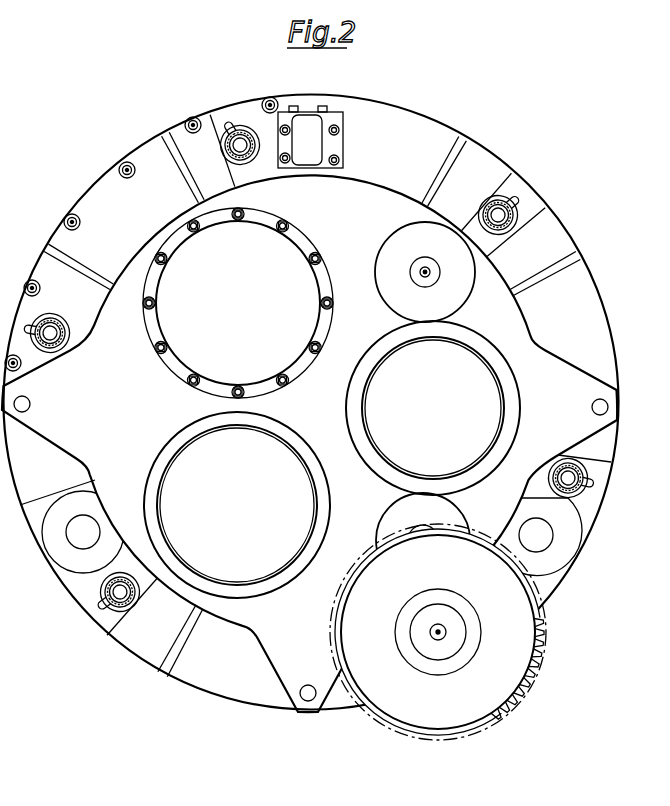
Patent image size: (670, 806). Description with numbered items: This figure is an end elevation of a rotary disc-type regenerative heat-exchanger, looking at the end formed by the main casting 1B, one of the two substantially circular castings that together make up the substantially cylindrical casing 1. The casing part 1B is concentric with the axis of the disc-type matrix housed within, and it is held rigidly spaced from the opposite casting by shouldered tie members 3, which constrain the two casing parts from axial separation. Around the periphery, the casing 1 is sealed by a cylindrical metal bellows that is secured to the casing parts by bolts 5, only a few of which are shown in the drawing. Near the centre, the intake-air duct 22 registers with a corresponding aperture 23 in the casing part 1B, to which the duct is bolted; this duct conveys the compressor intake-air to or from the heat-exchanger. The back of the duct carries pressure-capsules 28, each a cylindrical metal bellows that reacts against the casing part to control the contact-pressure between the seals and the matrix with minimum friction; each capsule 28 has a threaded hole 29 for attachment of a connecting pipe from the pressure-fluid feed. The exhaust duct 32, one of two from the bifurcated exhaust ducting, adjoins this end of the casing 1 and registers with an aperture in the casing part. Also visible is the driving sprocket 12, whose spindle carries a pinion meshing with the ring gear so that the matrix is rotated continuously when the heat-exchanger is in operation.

The casing 1 is at (592, 283).
The main casting 1B is at (408, 122).
The shouldered tie member 3 is at (58, 340).
The bolt 5 is at (127, 178).
The driving sprocket 12 is at (524, 694).
The intake-air duct 22 is at (504, 420).
The aperture 23 is at (446, 409).
The pressure-capsule 28 is at (398, 231).
The threaded hole 29 is at (420, 272).
The exhaust duct 32 is at (187, 438).